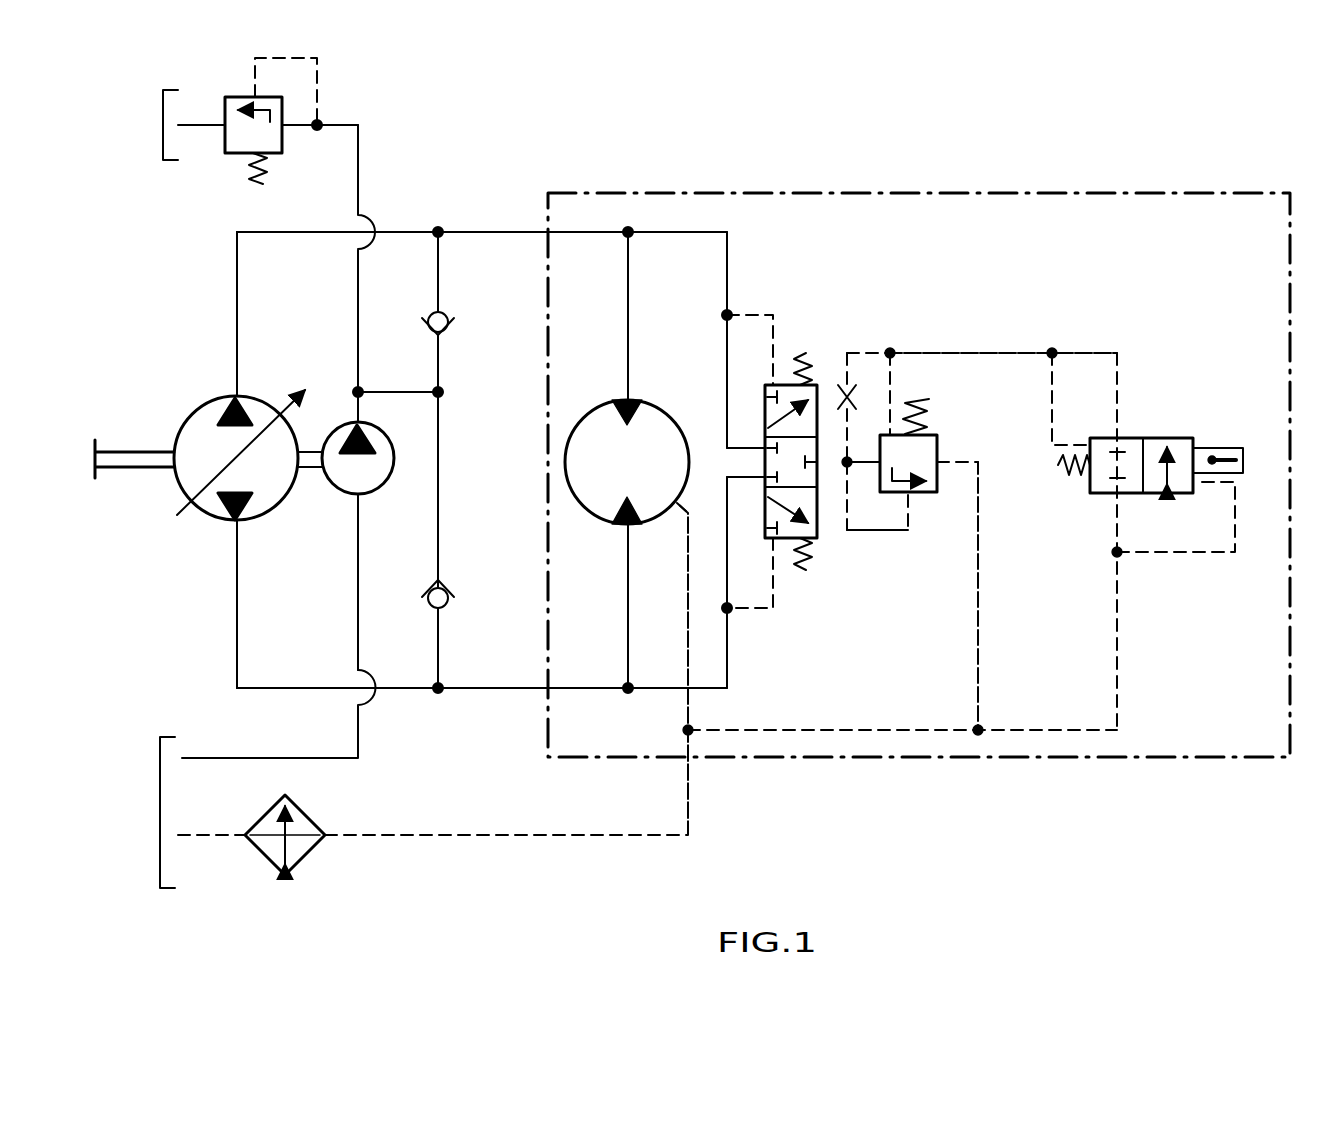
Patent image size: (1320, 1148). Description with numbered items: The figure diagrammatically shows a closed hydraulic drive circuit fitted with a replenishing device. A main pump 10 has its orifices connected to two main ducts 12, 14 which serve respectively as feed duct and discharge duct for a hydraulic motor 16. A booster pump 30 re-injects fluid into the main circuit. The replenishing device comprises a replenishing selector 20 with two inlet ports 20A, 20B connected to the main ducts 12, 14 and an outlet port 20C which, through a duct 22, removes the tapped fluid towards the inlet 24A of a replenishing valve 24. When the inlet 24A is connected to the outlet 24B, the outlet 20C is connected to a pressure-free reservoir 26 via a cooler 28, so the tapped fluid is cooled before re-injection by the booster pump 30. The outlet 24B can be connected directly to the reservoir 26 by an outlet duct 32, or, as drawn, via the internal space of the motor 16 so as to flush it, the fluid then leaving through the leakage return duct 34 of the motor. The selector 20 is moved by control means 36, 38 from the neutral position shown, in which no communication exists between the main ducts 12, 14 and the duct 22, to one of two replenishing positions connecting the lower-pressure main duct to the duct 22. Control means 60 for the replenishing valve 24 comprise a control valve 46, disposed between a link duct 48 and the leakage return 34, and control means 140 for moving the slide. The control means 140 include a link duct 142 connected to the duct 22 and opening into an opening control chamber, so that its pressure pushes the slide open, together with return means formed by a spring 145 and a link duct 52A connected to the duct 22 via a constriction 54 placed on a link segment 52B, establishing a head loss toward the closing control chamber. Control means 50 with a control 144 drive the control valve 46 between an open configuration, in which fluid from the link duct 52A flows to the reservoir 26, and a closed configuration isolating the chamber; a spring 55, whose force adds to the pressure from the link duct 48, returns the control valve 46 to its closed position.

The main pump 10 is at (197, 405).
The main duct 12 is at (298, 233).
The main duct 14 is at (298, 687).
The hydraulic motor 16 is at (596, 406).
The replenishing selector 20 is at (767, 386).
The inlet port 20A is at (765, 448).
The inlet port 20B is at (765, 477).
The outlet port 20C is at (830, 465).
The duct 22 is at (847, 470).
The replenishing valve 24 is at (940, 444).
The inlet 24A is at (878, 459).
The outlet 24B is at (938, 483).
The pressure-free reservoir 26 is at (159, 808).
The cooler 28 is at (308, 853).
The booster pump 30 is at (386, 483).
The outlet duct 32 is at (978, 646).
The leakage return duct 34 is at (682, 574).
The control means 36 is at (795, 323).
The control means 38 is at (804, 581).
The control valve 46 is at (1084, 494).
The link duct 48 is at (975, 352).
The control means 50 is at (1158, 415).
The link duct 52A is at (892, 392).
The link segment 52B is at (872, 353).
The constriction 54 is at (841, 383).
The spring 55 is at (1057, 470).
The control means 60 is at (1092, 232).
The control means 140 is at (946, 306).
The link duct 142 is at (878, 532).
The control 144 is at (1219, 448).
The spring 145 is at (930, 412).